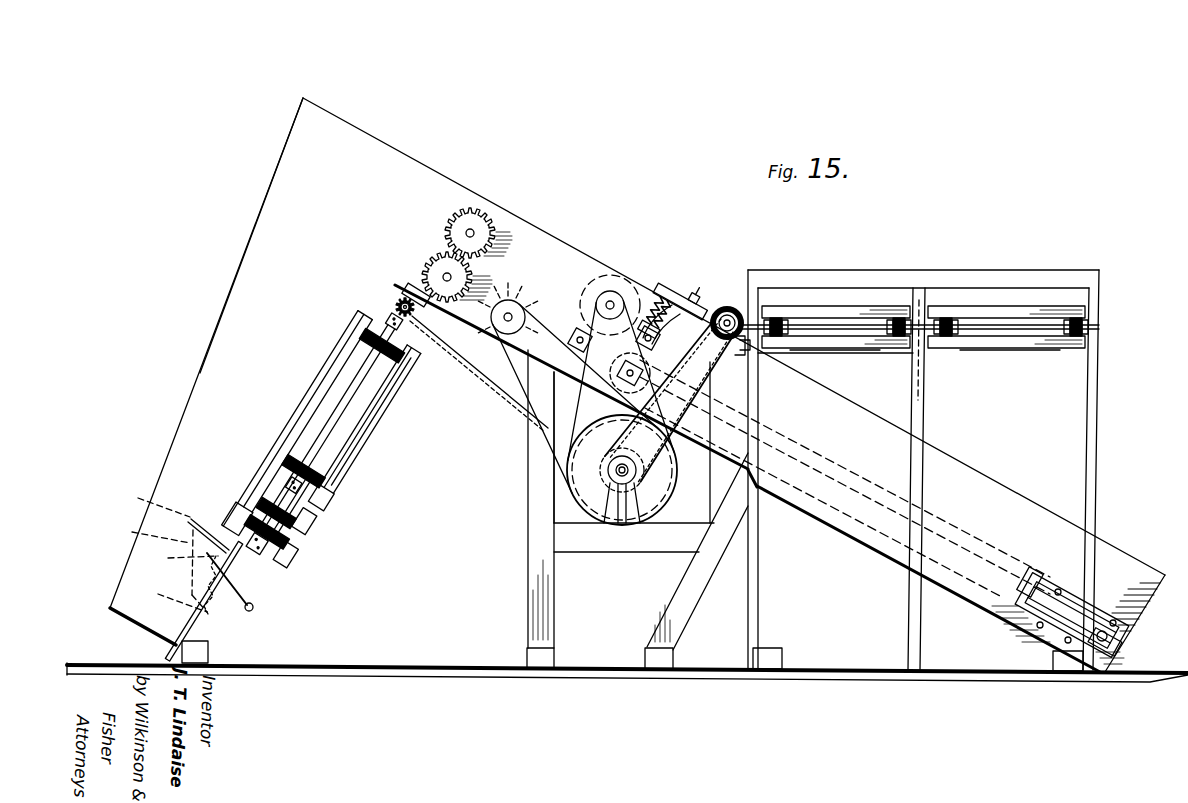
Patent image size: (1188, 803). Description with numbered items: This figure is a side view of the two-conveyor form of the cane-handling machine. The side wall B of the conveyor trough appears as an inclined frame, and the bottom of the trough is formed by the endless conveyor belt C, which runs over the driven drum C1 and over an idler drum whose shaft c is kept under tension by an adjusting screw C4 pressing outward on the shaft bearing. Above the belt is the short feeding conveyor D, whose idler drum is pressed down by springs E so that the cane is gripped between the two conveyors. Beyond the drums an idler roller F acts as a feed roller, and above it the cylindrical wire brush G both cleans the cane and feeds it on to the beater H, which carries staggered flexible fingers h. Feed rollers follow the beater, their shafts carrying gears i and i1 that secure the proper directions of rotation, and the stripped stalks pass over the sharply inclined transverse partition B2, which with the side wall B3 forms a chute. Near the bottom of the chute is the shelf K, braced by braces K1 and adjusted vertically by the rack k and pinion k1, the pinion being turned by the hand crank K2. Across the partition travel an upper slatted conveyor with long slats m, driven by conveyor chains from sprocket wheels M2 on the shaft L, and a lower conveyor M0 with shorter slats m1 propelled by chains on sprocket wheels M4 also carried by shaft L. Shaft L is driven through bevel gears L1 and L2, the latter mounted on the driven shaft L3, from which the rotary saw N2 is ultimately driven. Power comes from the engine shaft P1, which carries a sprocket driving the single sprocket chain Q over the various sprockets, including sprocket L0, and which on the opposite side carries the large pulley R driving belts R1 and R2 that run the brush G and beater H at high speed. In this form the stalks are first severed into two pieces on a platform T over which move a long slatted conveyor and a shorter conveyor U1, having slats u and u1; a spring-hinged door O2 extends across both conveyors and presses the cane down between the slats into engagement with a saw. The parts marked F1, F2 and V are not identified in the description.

The side wall of conveyor trough B is at (1002, 486).
The transverse partition B2 is at (204, 614).
The side wall of chute B3 is at (197, 377).
The endless conveyor belt C is at (1002, 560).
The driven drum C1 is at (1100, 622).
The adjusting screw C4 is at (1032, 574).
The shaft of idler drum c is at (1128, 634).
The short conveyor D is at (762, 374).
The springs E is at (664, 300).
The idler roller F is at (356, 677).
The foot F1 is at (528, 656).
The standard F2 is at (528, 592).
The brush G is at (607, 290).
The beater H is at (490, 346).
The fingers h is at (516, 298).
The gear i is at (452, 222).
The gear i1 is at (440, 258).
The shelf K is at (138, 498).
The braces K1 is at (151, 535).
The hand crank K2 is at (254, 607).
The rack k is at (180, 585).
The pinion k1 is at (184, 559).
The shaft L is at (350, 412).
The sprocket L0 is at (416, 314).
The bevel gear L1 is at (392, 312).
The bevel gear L2 is at (388, 303).
The driven shaft L3 is at (398, 296).
The lower slatted conveyor M0 is at (298, 548).
The sprocket wheels M2 is at (386, 368).
The sprocket wheels M4 is at (304, 528).
The rotary saw N2 is at (320, 508).
The slats m is at (304, 420).
The shorter slats m1 is at (242, 510).
The door O2 is at (976, 303).
The main shaft P1 is at (612, 476).
The sprocket chain Q is at (482, 392).
The large pulley R is at (580, 478).
The belt R1 is at (587, 403).
The belt R2 is at (527, 392).
The platform T is at (1100, 328).
The slatted conveyor U1 is at (840, 304).
The slats u is at (1045, 351).
The slats u1 is at (870, 352).
The bearing V is at (1090, 318).